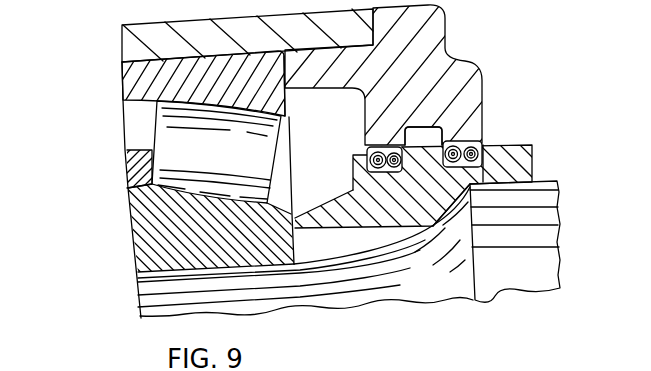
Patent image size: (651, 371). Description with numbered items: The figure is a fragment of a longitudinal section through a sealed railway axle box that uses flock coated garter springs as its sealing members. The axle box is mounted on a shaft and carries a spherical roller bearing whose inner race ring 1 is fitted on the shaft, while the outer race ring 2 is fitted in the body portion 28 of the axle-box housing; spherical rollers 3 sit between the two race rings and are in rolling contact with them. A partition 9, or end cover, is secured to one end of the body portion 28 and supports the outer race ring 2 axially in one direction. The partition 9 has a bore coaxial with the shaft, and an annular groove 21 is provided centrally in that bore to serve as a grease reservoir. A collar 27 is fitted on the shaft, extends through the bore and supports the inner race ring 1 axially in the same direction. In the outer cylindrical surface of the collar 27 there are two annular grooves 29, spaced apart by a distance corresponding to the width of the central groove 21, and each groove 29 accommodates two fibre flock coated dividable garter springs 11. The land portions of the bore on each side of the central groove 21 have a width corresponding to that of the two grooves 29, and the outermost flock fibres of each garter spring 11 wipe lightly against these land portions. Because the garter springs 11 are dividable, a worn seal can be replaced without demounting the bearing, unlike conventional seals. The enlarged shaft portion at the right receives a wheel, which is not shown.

The inner race ring 1 is at (132, 207).
The outer race ring 2 is at (128, 82).
The spherical rollers 3 is at (164, 133).
The partition 9 is at (445, 59).
The fibre flock coated dividable garter springs 11 is at (475, 142).
The annular groove 21 is at (423, 131).
The collar 27 is at (432, 208).
The body portion 28 is at (128, 50).
The annular grooves 29 is at (353, 190).